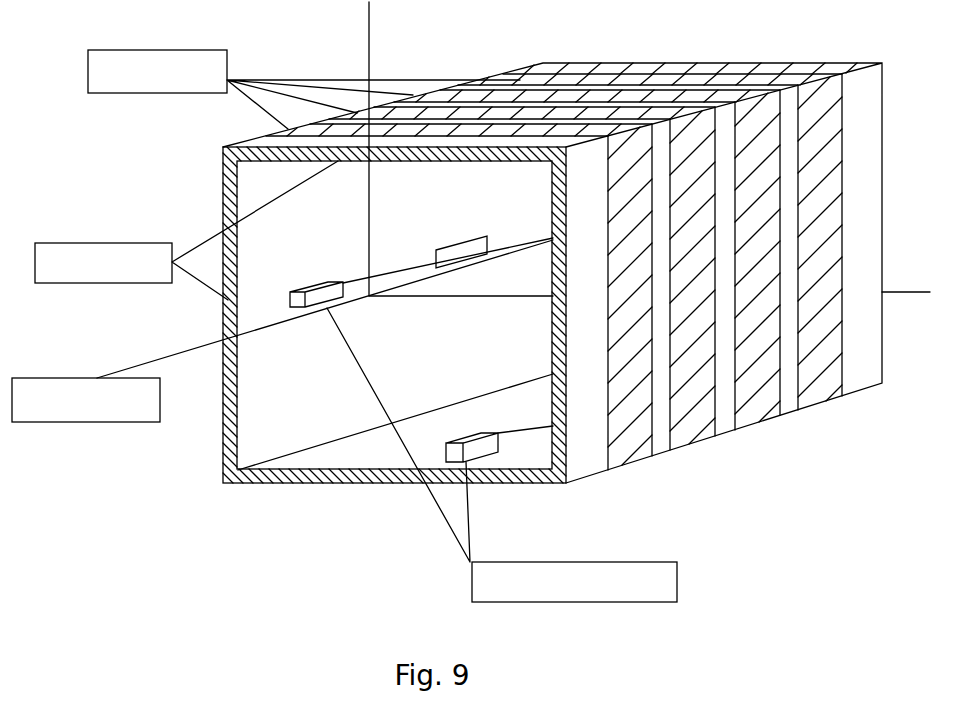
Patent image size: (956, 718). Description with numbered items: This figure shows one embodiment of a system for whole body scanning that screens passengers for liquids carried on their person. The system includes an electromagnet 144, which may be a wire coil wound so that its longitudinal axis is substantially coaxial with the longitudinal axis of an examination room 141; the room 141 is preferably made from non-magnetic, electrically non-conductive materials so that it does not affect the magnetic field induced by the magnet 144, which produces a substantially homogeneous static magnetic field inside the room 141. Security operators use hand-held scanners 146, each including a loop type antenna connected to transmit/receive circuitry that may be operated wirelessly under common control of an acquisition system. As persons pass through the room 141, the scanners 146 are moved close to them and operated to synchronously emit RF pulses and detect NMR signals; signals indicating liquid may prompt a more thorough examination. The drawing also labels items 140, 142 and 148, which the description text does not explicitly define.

The room including shielding 140 is at (523, 484).
The examination room 141 is at (297, 460).
The transmit/receive antenna axis 142 is at (460, 296).
The electromagnet 144 is at (757, 423).
The hand-held scanner 146 is at (677, 582).
The room axis / main field axis 148 is at (87, 422).